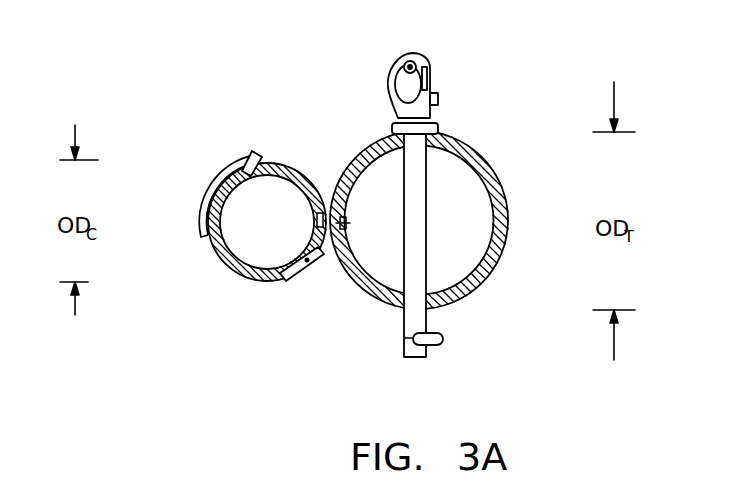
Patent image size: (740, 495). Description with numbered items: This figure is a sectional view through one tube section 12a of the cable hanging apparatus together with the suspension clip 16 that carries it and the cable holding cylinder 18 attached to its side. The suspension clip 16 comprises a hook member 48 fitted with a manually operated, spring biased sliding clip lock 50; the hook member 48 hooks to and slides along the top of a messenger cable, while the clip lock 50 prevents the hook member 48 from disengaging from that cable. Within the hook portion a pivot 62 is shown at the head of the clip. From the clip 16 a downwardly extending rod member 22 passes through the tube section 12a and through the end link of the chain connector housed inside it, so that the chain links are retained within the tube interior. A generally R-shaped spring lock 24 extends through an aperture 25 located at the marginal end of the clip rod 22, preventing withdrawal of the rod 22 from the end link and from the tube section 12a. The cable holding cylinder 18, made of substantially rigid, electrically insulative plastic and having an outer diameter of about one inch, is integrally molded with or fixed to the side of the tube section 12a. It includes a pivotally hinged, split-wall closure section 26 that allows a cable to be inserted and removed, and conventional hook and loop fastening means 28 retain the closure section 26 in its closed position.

The tube section 12a is at (468, 147).
The suspension clip 16 is at (418, 72).
The cable holding cylinder 18 is at (280, 163).
The rod member 22 is at (428, 187).
The spring lock 24 is at (445, 338).
The aperture 25 is at (412, 338).
The closure section 26 is at (268, 283).
The hook and loop fastening means 28 is at (233, 168).
The hook member 48 is at (410, 52).
The clip lock 50 is at (428, 80).
The pivot 62 is at (400, 74).